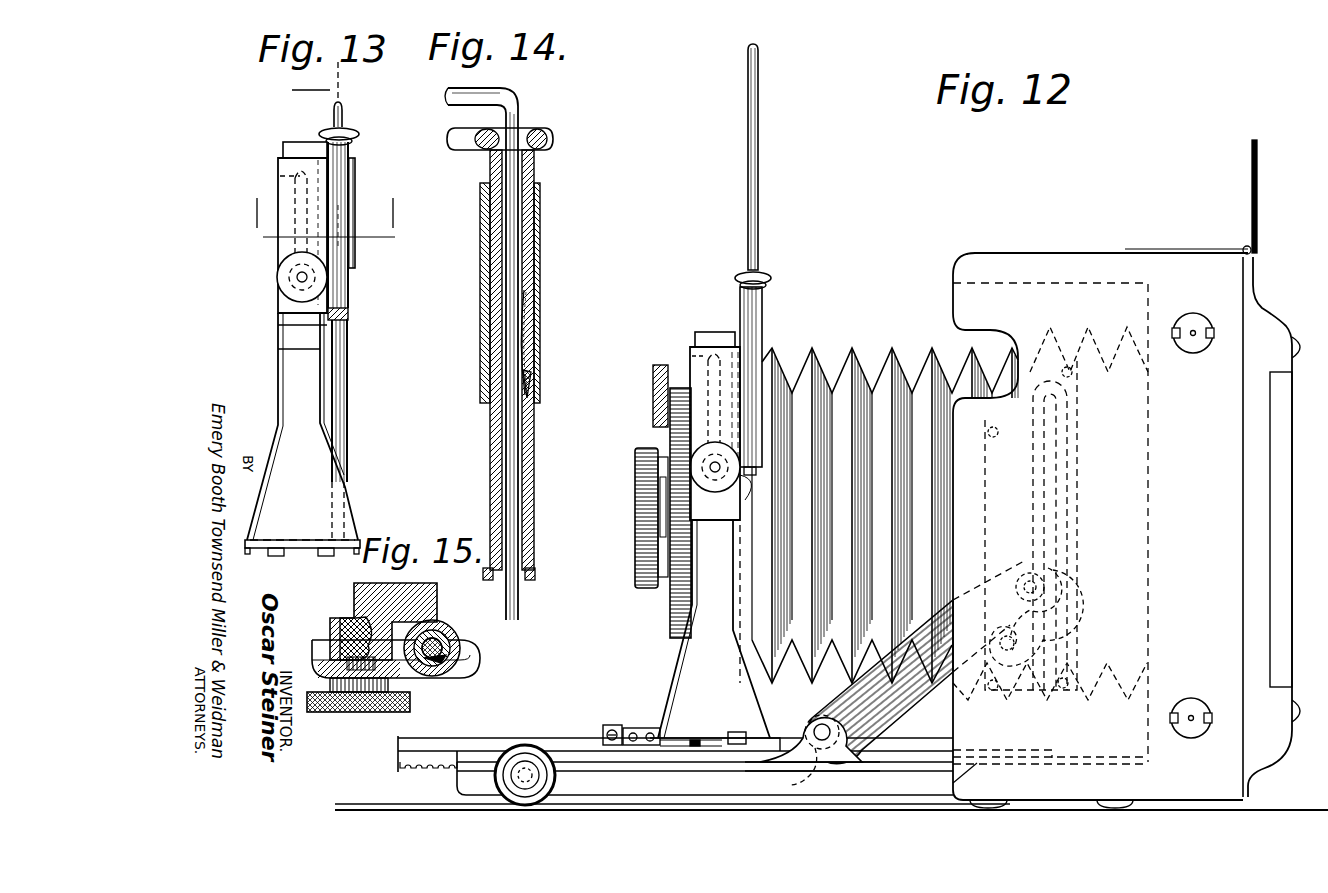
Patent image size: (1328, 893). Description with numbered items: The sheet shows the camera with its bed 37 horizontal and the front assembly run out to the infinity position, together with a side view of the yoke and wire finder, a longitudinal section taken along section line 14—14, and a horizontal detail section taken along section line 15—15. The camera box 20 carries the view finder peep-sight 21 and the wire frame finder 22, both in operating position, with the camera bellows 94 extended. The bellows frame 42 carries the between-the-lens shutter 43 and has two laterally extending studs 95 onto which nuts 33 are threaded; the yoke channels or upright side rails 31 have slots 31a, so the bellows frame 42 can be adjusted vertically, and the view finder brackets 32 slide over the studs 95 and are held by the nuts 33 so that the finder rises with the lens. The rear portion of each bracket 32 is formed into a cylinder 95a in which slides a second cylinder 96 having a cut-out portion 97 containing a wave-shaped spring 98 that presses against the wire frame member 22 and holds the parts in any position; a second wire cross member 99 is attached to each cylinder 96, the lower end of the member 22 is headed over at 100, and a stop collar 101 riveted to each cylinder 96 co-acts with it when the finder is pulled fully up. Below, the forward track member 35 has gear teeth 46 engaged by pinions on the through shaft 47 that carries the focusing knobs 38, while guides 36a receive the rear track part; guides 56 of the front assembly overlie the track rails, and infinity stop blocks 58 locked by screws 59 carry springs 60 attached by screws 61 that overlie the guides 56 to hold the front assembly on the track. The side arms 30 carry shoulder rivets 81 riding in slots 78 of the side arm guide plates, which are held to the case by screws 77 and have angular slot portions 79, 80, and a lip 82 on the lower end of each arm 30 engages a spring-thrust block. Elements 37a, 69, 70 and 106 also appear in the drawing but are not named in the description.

In FIG. 13, the section line 14 is at (295, 206).
In FIG. 13, the section line 15 is at (325, 225).
In FIG. 12, the camera box 20 is at (1088, 268).
In FIG. 12, the view finder peep-sight 21 is at (1258, 200).
In FIG. 13, the wire frame finder 22 is at (344, 121).
In FIG. 14, the wire frame finder 22 is at (520, 101).
In FIG. 15, the wire frame finder 22 is at (442, 652).
In FIG. 12, the wire frame finder 22 is at (758, 180).
In FIG. 12, the camera side arms 30 is at (905, 688).
In FIG. 13, the camera yoke channels 31 is at (304, 142).
In FIG. 12, the camera yoke channels 31 is at (718, 340).
In FIG. 13, the slots 31a is at (278, 176).
In FIG. 12, the slots 31a is at (690, 358).
In FIG. 13, the view finder brackets 32 is at (280, 313).
In FIG. 15, the view finder brackets 32 is at (404, 680).
In FIG. 12, the view finder brackets 32 is at (692, 368).
In FIG. 13, the nuts 33 is at (283, 278).
In FIG. 15, the nuts 33 is at (345, 713).
In FIG. 12, the forward track member 35 is at (398, 753).
In FIG. 12, the guides 36a is at (1090, 757).
In FIG. 12, the camera bed 37 is at (398, 740).
In FIG. 12, the guide strip 37a is at (1008, 750).
In FIG. 12, the focusing knobs 38 is at (525, 745).
In FIG. 15, the bellows frame 42 is at (420, 592).
In FIG. 12, the between-the-lens shutter 43 is at (670, 612).
In FIG. 12, the gear teeth 46 is at (424, 770).
In FIG. 12, the through shaft 47 is at (462, 782).
In FIG. 13, the guides 56 is at (326, 557).
In FIG. 12, the guides 56 is at (738, 732).
In FIG. 12, the infinity stop blocks 58 is at (604, 733).
In FIG. 12, the screws 59 is at (612, 727).
In FIG. 12, the springs 60 is at (676, 740).
In FIG. 12, the screws 61 is at (643, 728).
In FIG. 12, the bracket 69 is at (870, 770).
In FIG. 12, the pivot pin 70 is at (828, 738).
In FIG. 12, the screws 77 is at (1072, 376).
In FIG. 12, the slot 78 is at (1062, 430).
In FIG. 12, the angular slot portion 79 is at (1048, 603).
In FIG. 12, the angular slot portion 80 is at (1050, 638).
In FIG. 12, the shoulder rivets 81 is at (1024, 575).
In FIG. 12, the lip 82 is at (808, 780).
In FIG. 12, the camera bellows 94 is at (862, 352).
In FIG. 13, the studs 95 is at (312, 278).
In FIG. 15, the studs 95 is at (351, 626).
In FIG. 12, the studs 95 is at (715, 474).
In FIG. 14, the cylinder 95a is at (540, 249).
In FIG. 15, the cylinder 95a is at (457, 638).
In FIG. 14, the second cylinder 96 is at (530, 494).
In FIG. 15, the second cylinder 96 is at (450, 648).
In FIG. 12, the second cylinder 96 is at (762, 320).
In FIG. 14, the cut-out portion 97 is at (531, 301).
In FIG. 15, the cut-out portion 97 is at (438, 665).
In FIG. 13, the spring 98 is at (352, 197).
In FIG. 14, the spring 98 is at (533, 383).
In FIG. 13, the second wire cross member 99 is at (360, 136).
In FIG. 14, the second wire cross member 99 is at (550, 139).
In FIG. 12, the second wire cross member 99 is at (771, 279).
In FIG. 13, the headed-over lower end 100 is at (340, 541).
In FIG. 12, the headed-over lower end 100 is at (748, 478).
In FIG. 14, the stop collar 101 is at (537, 575).
In FIG. 12, the back cover 106 is at (1268, 326).